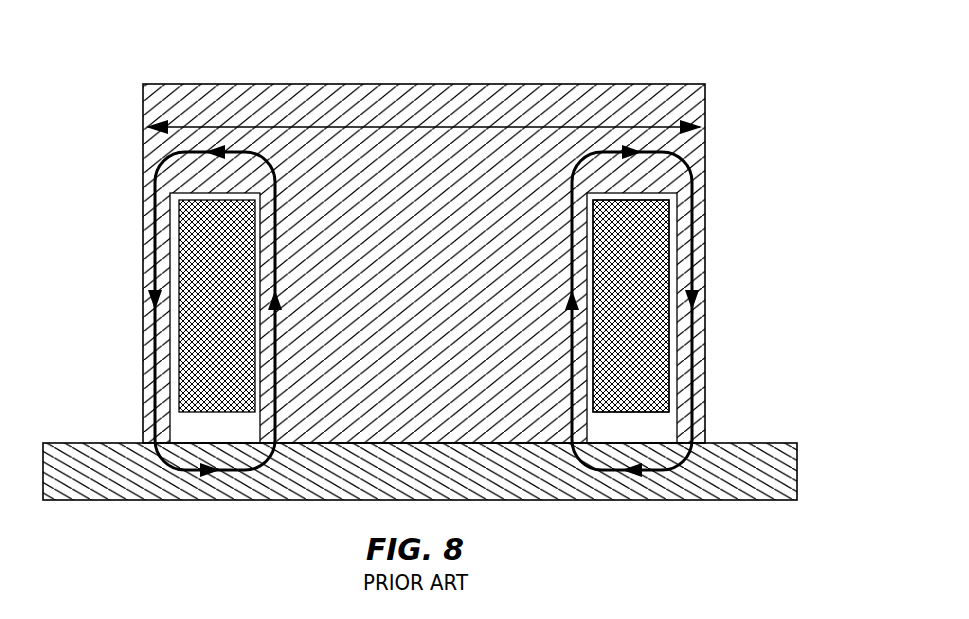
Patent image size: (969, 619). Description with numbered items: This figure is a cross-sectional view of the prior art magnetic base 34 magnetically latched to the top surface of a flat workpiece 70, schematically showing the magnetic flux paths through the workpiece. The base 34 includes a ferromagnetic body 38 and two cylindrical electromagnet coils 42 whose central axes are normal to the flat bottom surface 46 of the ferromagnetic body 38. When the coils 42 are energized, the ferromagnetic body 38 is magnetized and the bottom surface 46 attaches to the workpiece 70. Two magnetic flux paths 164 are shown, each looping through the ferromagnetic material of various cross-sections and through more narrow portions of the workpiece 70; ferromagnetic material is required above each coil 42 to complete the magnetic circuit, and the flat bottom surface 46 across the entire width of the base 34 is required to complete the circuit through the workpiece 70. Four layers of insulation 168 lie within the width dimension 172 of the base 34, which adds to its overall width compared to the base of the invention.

The prior art magnetic base 34 is at (72, 99).
The ferromagnetic body 38 is at (668, 104).
The electromagnet coil 42 is at (640, 353).
The flat bottom surface 46 is at (530, 445).
The flat workpiece 70 is at (118, 477).
The magnetic flux paths 164 is at (158, 170).
The insulation layers 168 is at (180, 380).
The width dimension 172 is at (262, 125).